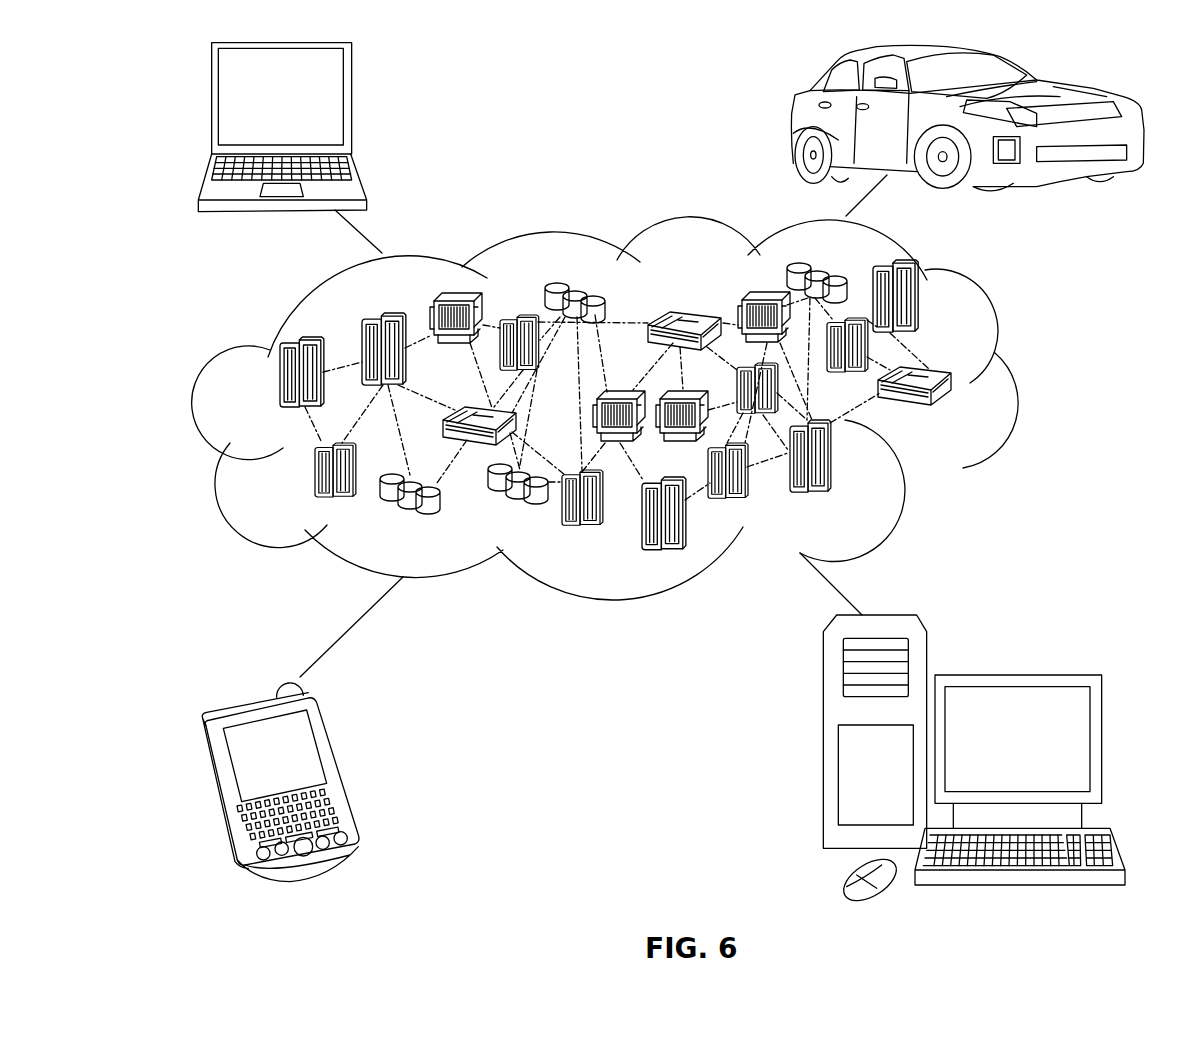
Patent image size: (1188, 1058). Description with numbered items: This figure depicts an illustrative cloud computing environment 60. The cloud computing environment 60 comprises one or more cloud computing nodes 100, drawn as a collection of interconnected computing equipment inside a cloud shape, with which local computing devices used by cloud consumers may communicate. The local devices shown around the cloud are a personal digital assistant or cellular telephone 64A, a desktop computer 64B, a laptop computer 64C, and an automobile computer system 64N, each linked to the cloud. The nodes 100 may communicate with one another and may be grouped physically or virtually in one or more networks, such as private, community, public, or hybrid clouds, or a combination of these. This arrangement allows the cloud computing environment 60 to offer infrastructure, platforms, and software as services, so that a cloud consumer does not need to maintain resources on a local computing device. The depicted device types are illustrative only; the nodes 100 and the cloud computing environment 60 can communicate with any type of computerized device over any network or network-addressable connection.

The cloud computing environment 60 is at (1015, 383).
The cloud computing nodes 100 is at (957, 410).
The personal digital assistant or cellular telephone 64A is at (340, 768).
The desktop computer 64B is at (1015, 673).
The laptop computer 64C is at (350, 105).
The automobile computer system 64N is at (794, 123).